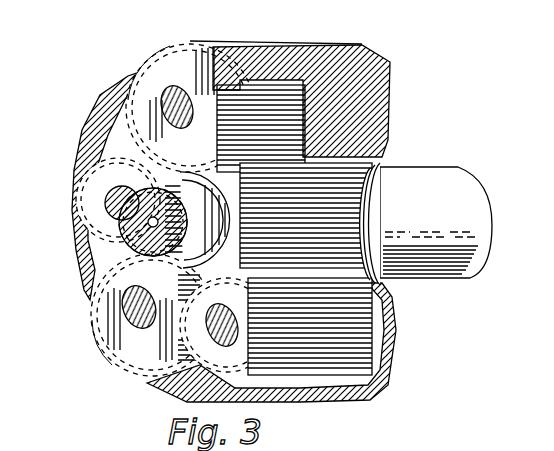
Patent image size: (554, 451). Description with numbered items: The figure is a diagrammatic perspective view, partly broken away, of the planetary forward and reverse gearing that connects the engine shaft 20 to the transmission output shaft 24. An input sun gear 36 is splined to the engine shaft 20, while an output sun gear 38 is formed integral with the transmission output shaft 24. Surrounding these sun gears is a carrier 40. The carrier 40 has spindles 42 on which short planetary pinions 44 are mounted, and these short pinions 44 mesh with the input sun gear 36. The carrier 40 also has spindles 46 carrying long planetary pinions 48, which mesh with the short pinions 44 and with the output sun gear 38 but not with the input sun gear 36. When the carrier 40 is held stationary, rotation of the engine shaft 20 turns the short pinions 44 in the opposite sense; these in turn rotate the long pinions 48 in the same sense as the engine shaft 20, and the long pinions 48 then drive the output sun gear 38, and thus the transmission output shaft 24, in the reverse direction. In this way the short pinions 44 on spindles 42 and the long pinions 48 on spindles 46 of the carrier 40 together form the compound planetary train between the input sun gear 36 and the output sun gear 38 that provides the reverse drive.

The engine shaft 20 is at (132, 226).
The transmission output shaft 24 is at (478, 186).
The input sun gear 36 is at (183, 278).
The output sun gear 38 is at (368, 160).
The carrier 40 is at (390, 72).
The spindles 42 is at (163, 96).
The short planetary pinions 44 is at (176, 52).
The spindles 46 is at (112, 198).
The long planetary pinions 48 is at (100, 172).